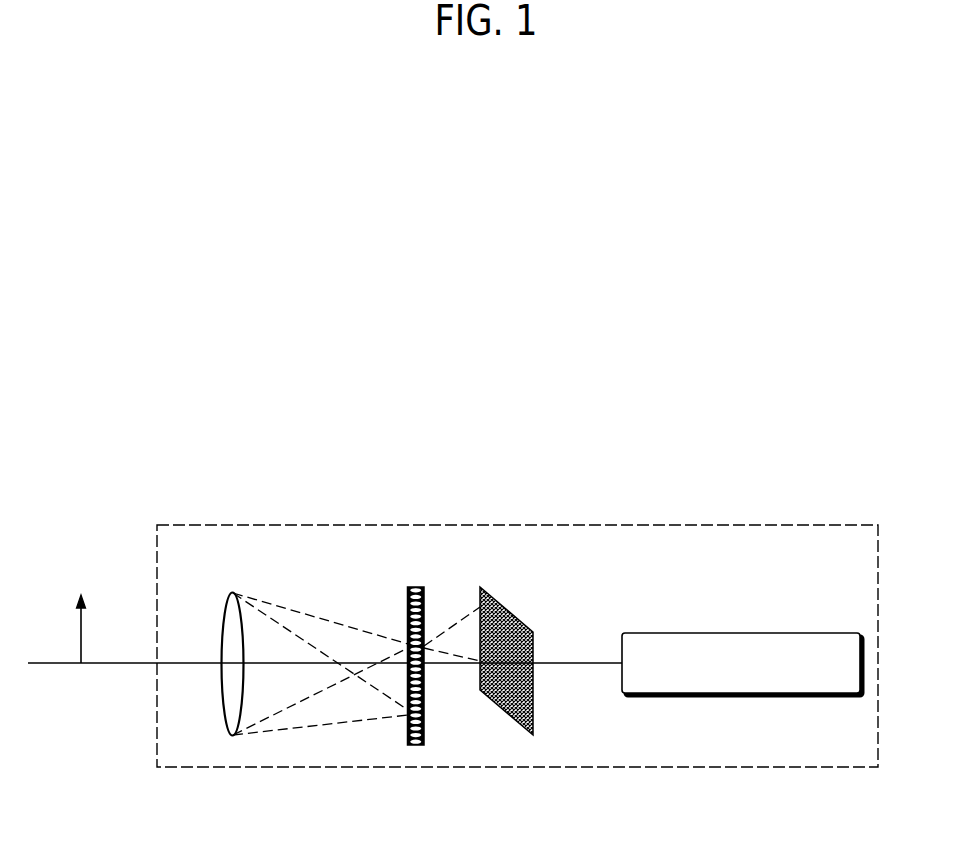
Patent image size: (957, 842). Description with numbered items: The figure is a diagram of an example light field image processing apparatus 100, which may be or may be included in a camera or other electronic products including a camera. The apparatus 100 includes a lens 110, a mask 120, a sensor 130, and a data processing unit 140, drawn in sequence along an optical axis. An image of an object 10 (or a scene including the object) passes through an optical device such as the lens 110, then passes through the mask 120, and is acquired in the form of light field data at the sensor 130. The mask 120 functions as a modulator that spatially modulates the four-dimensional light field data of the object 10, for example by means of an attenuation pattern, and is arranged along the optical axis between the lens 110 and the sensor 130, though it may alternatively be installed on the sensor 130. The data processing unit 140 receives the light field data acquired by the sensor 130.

The object 10 is at (78, 634).
The light field image processing apparatus 100 is at (443, 768).
The lens 110 is at (228, 595).
The mask 120 is at (420, 586).
The sensor 130 is at (482, 586).
The data processing unit 140 is at (755, 695).